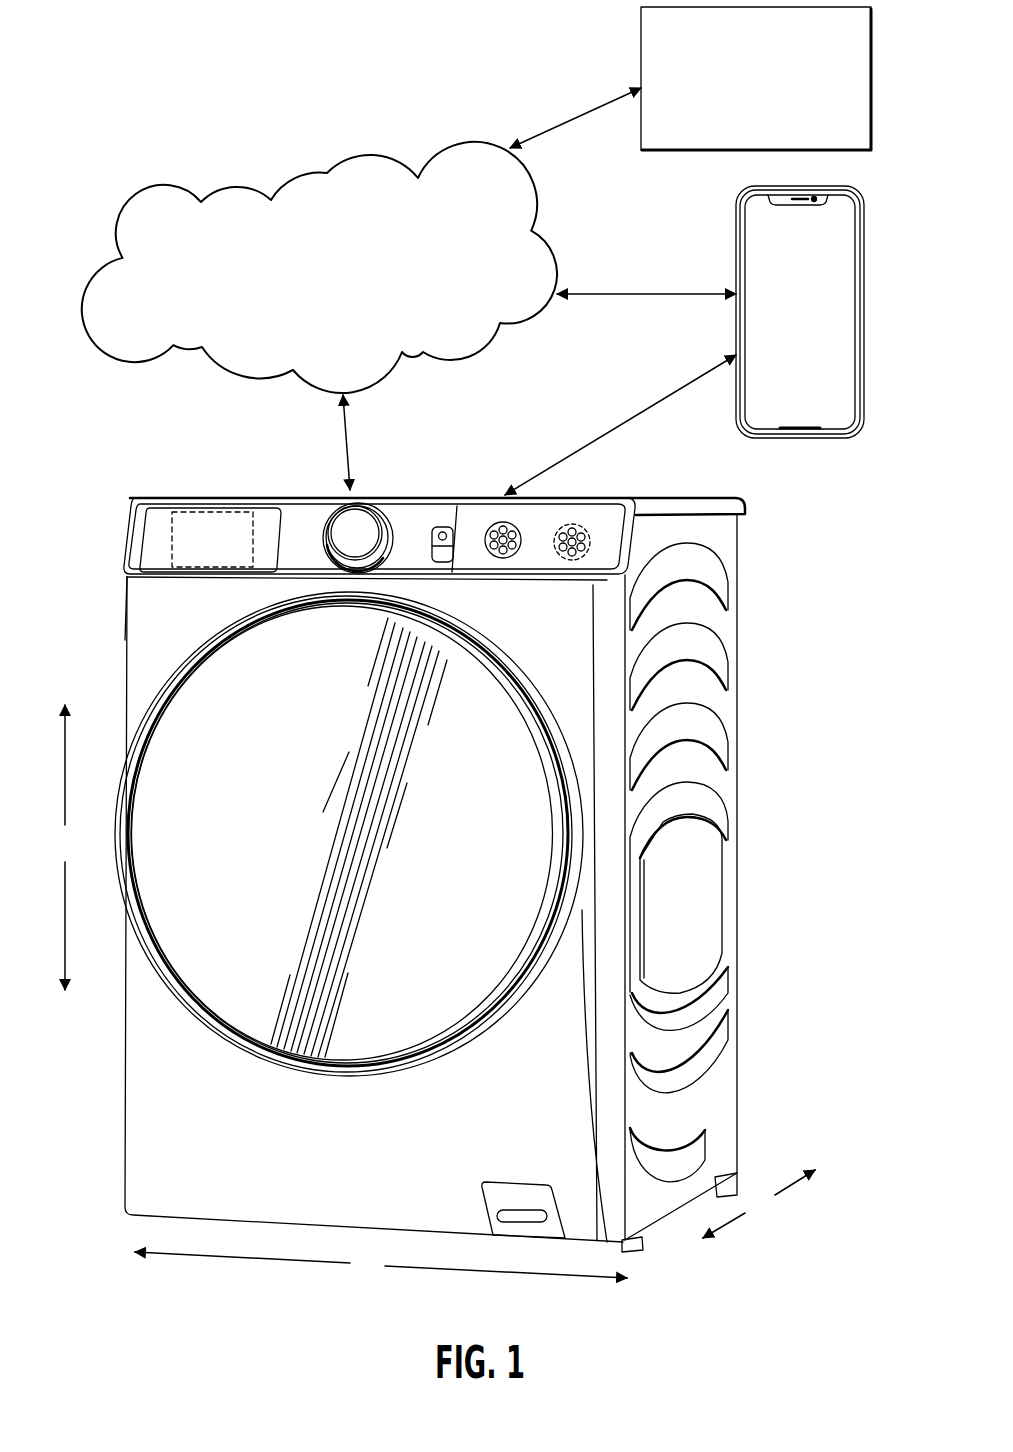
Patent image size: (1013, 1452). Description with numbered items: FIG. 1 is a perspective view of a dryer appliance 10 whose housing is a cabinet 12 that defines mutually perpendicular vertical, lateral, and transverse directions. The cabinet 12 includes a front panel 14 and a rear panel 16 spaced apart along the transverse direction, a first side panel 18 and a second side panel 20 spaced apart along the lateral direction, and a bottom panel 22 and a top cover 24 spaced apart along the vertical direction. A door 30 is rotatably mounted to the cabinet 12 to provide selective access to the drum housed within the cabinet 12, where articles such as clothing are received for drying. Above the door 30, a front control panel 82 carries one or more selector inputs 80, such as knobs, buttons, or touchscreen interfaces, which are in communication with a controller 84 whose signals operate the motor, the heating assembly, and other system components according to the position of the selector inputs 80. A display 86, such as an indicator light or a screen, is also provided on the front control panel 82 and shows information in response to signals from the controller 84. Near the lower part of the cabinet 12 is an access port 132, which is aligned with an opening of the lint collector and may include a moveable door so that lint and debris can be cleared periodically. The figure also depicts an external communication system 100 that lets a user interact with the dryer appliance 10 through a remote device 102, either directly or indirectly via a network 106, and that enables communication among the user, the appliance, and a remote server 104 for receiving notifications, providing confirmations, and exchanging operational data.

The dryer appliance 10 is at (72, 510).
The cabinet 12 is at (727, 778).
The front panel 14 is at (178, 1135).
The rear panel 16 is at (738, 990).
The first side panel 18 is at (118, 628).
The second side panel 20 is at (688, 910).
The bottom panel 22 is at (640, 1226).
The top cover 24 is at (700, 494).
The door 30 is at (226, 810).
The selector inputs 80 is at (370, 533).
The front control panel 82 is at (307, 525).
The controller 84 is at (173, 540).
The display 86 is at (263, 523).
The external communication system 100 is at (283, 115).
The remote device 102 is at (783, 320).
The remote server 104 is at (739, 92).
The network 106 is at (310, 273).
The access port 132 is at (495, 1192).